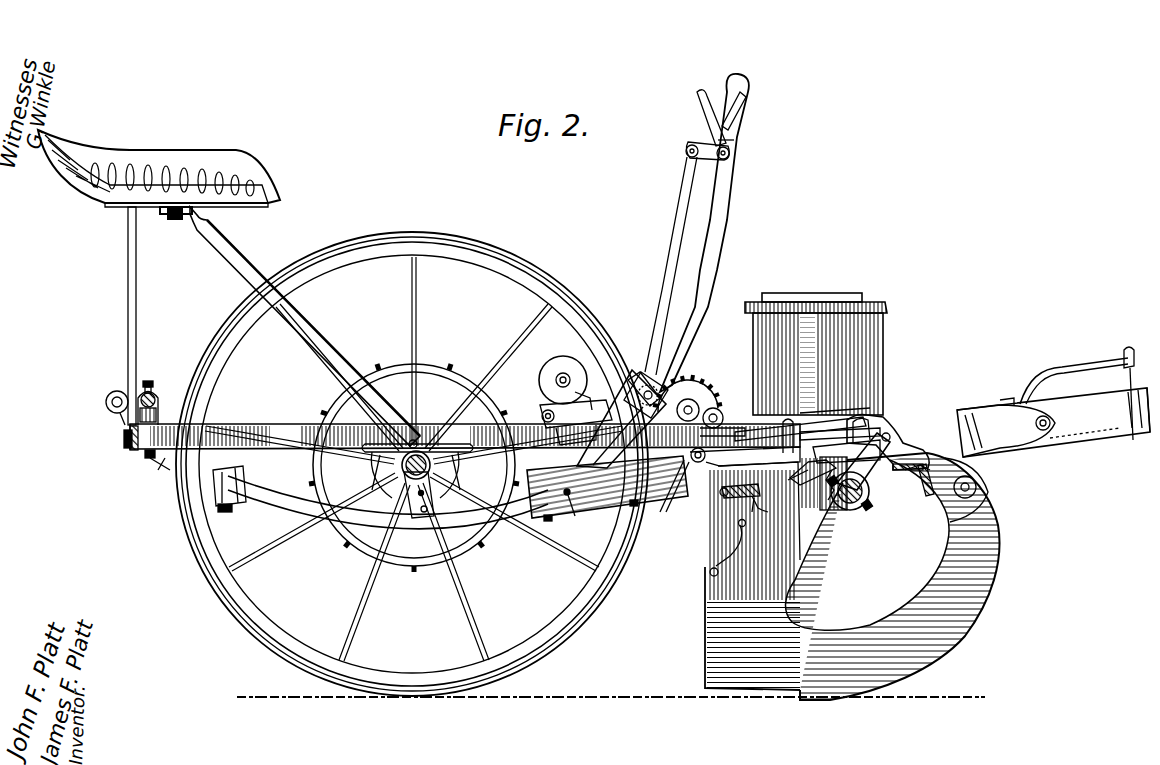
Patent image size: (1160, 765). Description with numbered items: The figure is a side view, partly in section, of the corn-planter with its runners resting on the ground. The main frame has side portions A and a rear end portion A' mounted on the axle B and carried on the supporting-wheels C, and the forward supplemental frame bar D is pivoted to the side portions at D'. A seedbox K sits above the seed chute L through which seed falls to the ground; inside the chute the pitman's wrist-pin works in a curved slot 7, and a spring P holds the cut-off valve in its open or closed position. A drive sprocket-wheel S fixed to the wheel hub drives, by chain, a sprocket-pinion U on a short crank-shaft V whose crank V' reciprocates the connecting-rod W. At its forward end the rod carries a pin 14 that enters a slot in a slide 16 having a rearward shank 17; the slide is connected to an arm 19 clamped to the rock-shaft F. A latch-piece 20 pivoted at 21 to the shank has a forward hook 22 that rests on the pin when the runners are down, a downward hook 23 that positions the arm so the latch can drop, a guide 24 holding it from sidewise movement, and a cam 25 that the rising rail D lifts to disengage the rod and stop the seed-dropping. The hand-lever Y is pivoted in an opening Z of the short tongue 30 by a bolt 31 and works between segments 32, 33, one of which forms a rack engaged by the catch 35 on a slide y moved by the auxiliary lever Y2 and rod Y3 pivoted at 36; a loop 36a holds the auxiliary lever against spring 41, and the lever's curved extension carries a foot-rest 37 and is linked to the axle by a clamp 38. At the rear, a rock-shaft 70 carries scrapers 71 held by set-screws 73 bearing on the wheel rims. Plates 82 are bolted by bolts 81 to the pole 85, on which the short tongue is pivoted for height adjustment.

The supporting-wheel C is at (412, 453).
The drive sprocket-wheel S is at (432, 375).
The side portion of main frame A is at (465, 424).
The rear end portion of main frame A' is at (107, 414).
The axle or shaft B is at (322, 478).
The seedbox K is at (828, 354).
The seed chute or tube L is at (752, 576).
The runner R is at (893, 576).
The hand-lever Y is at (728, 222).
The auxiliary hand-lever Y2 is at (692, 118).
The rod Y3 is at (666, 258).
The sprocket-pinion U is at (687, 390).
The short crank-shaft V is at (720, 403).
The crank V' is at (724, 418).
The pitman or connecting-rod W is at (770, 418).
The rock-shaft F is at (862, 498).
The bar of supplemental frame D is at (931, 487).
The pivotal connection D' is at (924, 443).
The casting I is at (857, 451).
The spring P is at (732, 556).
The opening of short tongue Z is at (581, 495).
The slide y is at (636, 380).
The curved slot 7 is at (798, 482).
The pin 14 is at (890, 425).
The slide 16 is at (822, 414).
The shank or stem 17 is at (672, 494).
The crank or arm 19 is at (870, 478).
The latch-piece 20 is at (840, 468).
The pivot 21 is at (745, 468).
The hook or catch 22 is at (872, 412).
The downwardly-projecting hook 23 is at (846, 508).
The guide 24 is at (830, 470).
The lifting-arm or cam 25 is at (734, 503).
The short tongue 30 is at (607, 487).
The bolt or pin 31 is at (574, 516).
The segment 32 is at (576, 421).
The segment 33 is at (575, 372).
The catch or bolt 35 is at (621, 419).
The pivot 36 is at (656, 385).
The loop 36a is at (736, 112).
The foot-rest 37 is at (431, 471).
The clamp or link 38 is at (437, 503).
The spring 41 is at (706, 130).
The rock-shaft 70 is at (156, 393).
The scraper or blade 71 is at (168, 462).
The set-screw 73 is at (148, 380).
The bolt 81 is at (1056, 436).
The plate 82 is at (1006, 427).
The pole or tongue 85 is at (1053, 422).